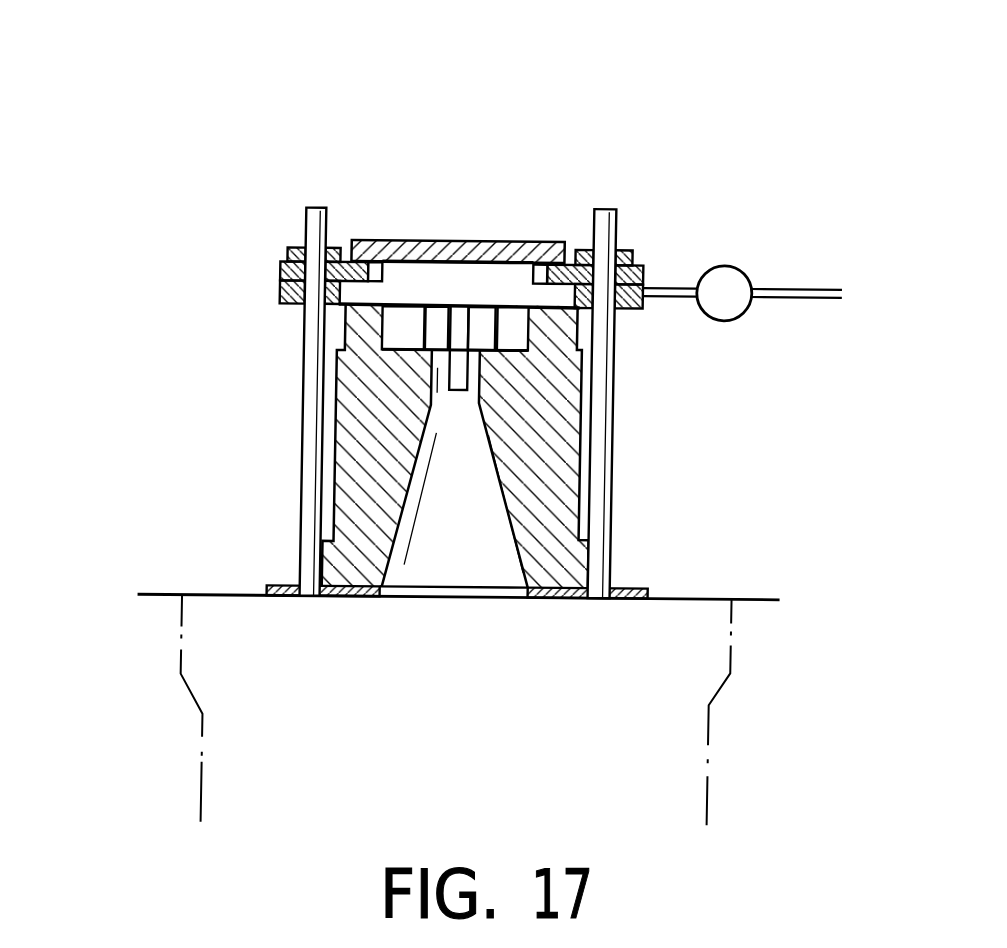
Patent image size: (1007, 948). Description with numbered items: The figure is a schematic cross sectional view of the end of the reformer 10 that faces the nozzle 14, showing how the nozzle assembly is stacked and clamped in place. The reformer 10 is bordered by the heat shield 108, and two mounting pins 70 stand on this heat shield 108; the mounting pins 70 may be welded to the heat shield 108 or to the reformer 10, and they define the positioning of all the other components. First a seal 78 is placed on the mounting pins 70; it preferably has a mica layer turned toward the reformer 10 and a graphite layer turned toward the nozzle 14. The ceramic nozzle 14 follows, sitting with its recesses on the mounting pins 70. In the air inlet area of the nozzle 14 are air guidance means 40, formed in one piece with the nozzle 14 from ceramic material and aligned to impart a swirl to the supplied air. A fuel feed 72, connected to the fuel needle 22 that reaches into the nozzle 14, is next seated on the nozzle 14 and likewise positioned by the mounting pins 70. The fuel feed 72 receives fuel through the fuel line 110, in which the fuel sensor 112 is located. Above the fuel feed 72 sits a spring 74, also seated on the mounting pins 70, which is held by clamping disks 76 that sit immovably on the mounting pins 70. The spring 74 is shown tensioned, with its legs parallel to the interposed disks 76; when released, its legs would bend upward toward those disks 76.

The reformer 10 is at (184, 658).
The nozzle 14 is at (550, 459).
The fuel needle 22 is at (456, 368).
The air guidance means 40 is at (356, 329).
The mounting pins 70 is at (304, 436).
The fuel feed 72 is at (408, 279).
The spring 74 is at (524, 241).
The clamping disks 76 is at (290, 249).
The seal 78 is at (633, 586).
The heat shield 108 is at (166, 597).
The fuel line 110 is at (801, 286).
The fuel sensor 112 is at (723, 283).